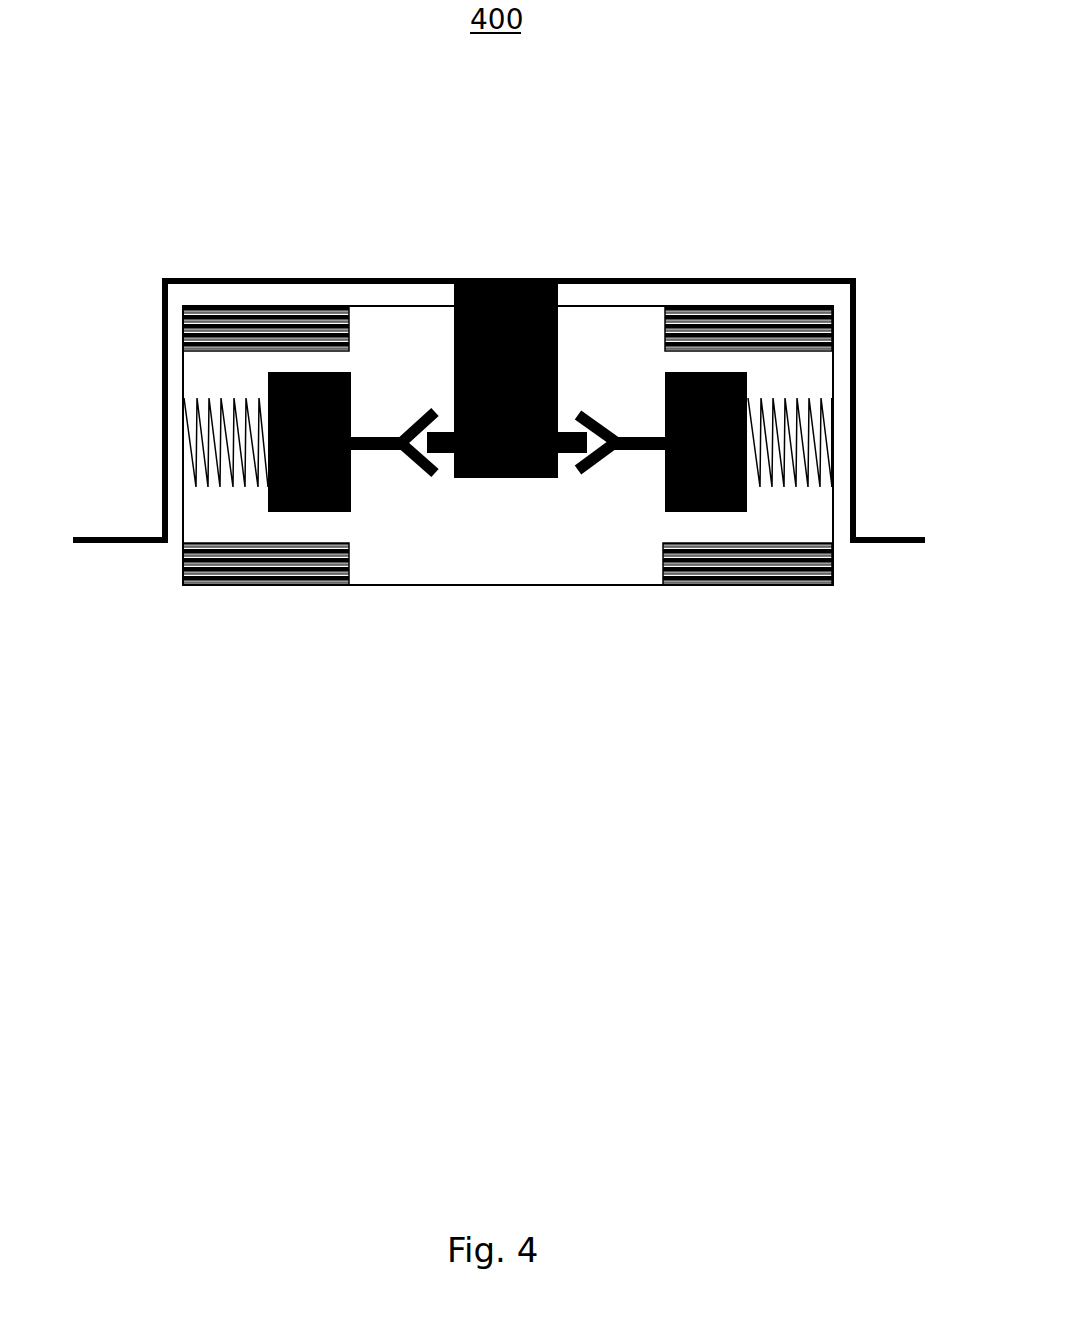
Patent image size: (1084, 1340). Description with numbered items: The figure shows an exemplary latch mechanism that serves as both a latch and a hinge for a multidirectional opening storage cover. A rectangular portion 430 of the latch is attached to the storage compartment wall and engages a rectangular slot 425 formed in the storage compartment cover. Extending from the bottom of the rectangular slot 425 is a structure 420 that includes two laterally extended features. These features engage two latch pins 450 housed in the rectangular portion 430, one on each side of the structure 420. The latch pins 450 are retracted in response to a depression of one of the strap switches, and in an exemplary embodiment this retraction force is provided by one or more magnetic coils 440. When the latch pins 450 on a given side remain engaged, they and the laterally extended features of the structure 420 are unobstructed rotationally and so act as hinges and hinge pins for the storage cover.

The structure 420 is at (507, 276).
The rectangular slot 425 is at (812, 279).
The rectangular portion 430 is at (509, 590).
The magnetic coils 440 is at (299, 592).
The latch pins 450 is at (362, 489).